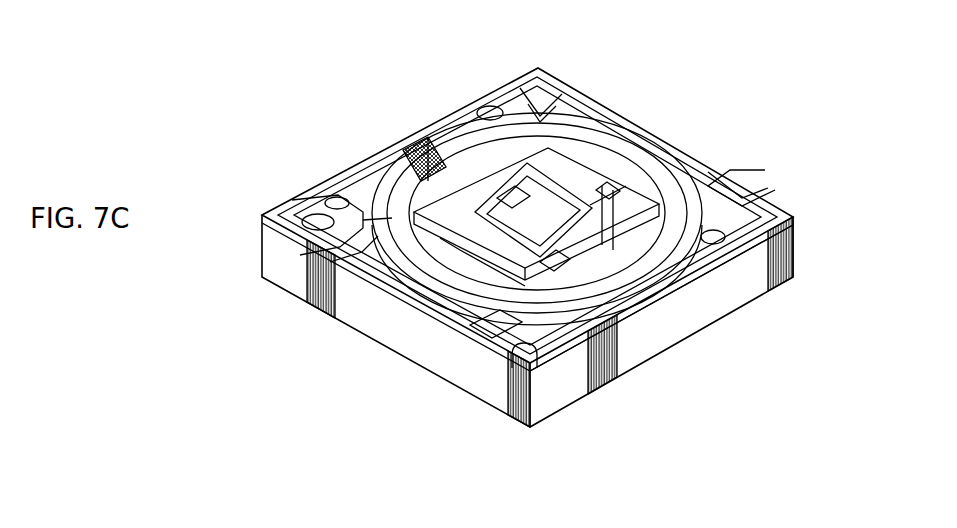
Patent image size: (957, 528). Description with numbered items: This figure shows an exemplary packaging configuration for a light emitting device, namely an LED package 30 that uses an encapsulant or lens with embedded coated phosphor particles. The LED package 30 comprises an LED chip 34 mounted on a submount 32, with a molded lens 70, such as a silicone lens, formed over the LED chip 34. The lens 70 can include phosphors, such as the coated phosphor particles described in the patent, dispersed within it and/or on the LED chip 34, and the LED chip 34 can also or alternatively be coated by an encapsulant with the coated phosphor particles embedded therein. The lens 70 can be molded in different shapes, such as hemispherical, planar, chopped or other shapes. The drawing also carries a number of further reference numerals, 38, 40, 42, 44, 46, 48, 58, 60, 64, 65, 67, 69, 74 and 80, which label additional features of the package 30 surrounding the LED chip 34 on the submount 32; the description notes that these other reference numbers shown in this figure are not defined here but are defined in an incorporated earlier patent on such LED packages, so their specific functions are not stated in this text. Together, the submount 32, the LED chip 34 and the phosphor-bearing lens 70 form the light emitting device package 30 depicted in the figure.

The LED package 30 is at (750, 82).
The submount 32 is at (797, 263).
The LED chip 34 is at (558, 195).
The bond pads 38 is at (503, 198).
The corner post 40 is at (538, 265).
The side terminal 42 is at (358, 247).
The annular seat 44 is at (538, 95).
The retaining clip 46 is at (760, 207).
The lead 48 is at (500, 276).
The spring contact 58 is at (357, 188).
The spring contact 60 is at (747, 192).
The terminal pins 64 is at (660, 205).
The side wall 65 is at (617, 378).
The trace 67 is at (473, 247).
The inner ring 69 is at (405, 160).
The molded lens 70 is at (470, 97).
The corner hole 74 is at (294, 198).
The top clip 80 is at (567, 97).